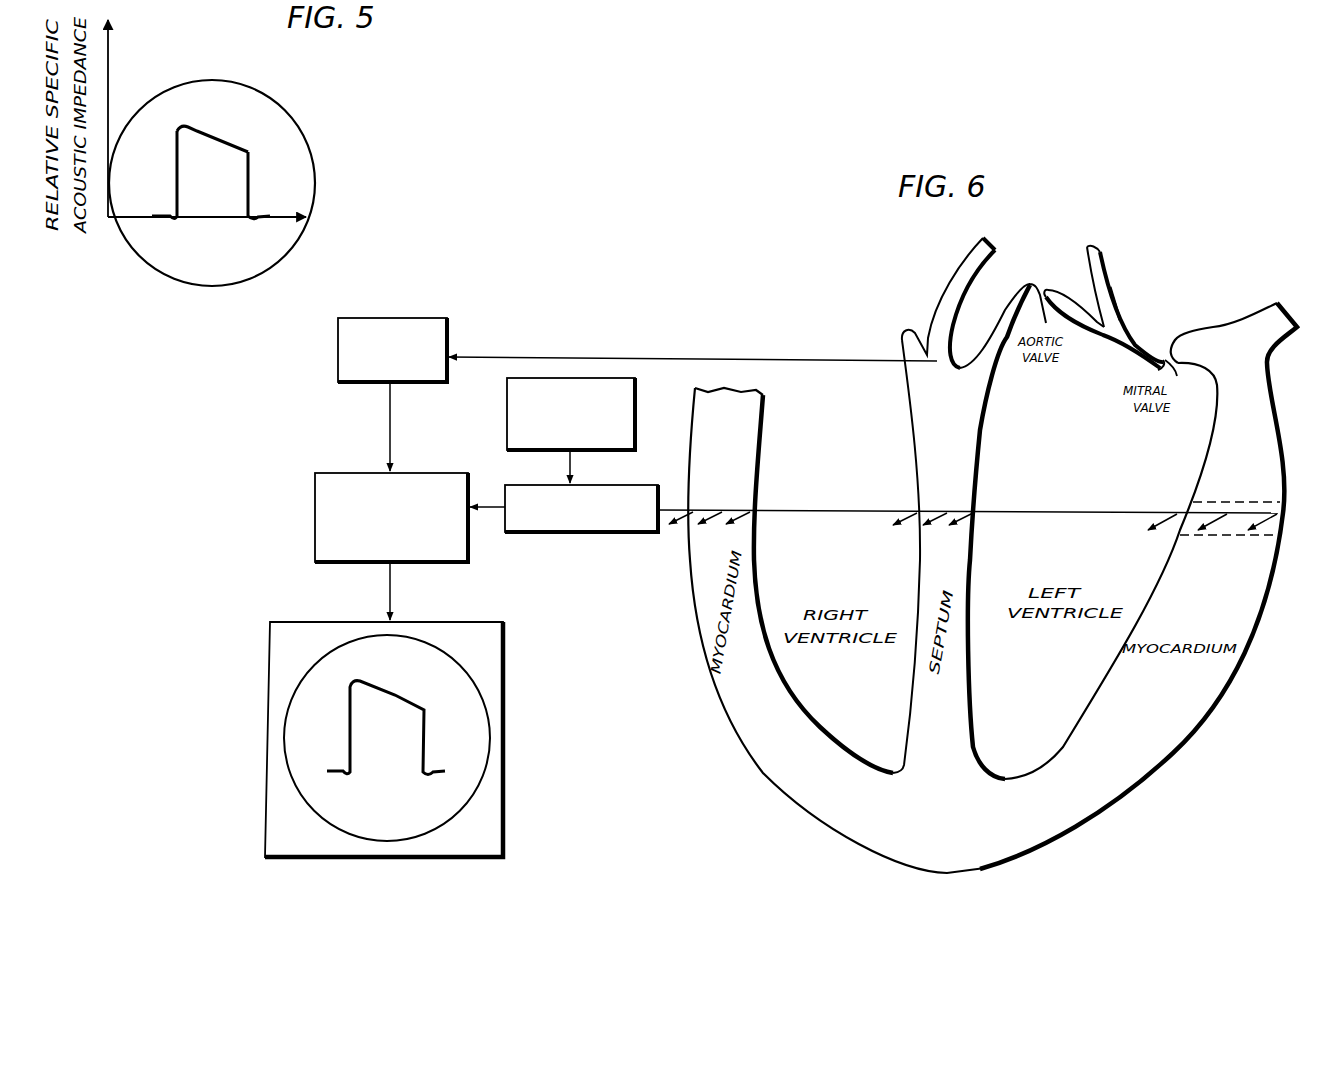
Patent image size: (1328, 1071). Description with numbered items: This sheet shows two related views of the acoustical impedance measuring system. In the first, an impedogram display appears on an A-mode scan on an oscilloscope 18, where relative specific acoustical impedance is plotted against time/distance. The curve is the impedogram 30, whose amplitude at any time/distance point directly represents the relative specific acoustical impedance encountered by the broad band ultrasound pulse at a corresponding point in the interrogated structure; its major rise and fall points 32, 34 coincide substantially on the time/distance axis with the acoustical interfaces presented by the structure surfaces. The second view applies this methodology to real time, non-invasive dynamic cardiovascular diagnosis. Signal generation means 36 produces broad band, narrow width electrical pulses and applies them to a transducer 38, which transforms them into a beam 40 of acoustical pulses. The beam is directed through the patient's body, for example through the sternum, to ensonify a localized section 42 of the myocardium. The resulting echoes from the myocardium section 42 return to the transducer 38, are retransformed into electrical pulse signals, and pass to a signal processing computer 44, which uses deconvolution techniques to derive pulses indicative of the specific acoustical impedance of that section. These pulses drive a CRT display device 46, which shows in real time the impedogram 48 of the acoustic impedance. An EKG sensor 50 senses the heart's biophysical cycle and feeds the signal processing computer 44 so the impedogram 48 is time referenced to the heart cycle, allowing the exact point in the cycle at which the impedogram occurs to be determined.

In FIG. 5, the oscilloscope 18 is at (285, 253).
In FIG. 5, the impedogram 30 is at (218, 148).
In FIG. 5, the major rise point 32 is at (176, 178).
In FIG. 5, the major fall point 34 is at (250, 178).
In FIG. 6, the signal generation means 36 is at (632, 397).
In FIG. 6, the transducer 38 is at (610, 528).
In FIG. 6, the beam 40 is at (993, 509).
In FIG. 6, the localized section of the myocardium 42 is at (1257, 535).
In FIG. 6, the signal processing computer 44 is at (324, 476).
In FIG. 6, the CRT display device 46 is at (490, 857).
In FIG. 6, the impedogram 48 is at (424, 733).
In FIG. 6, the EKG sensor 50 is at (438, 321).